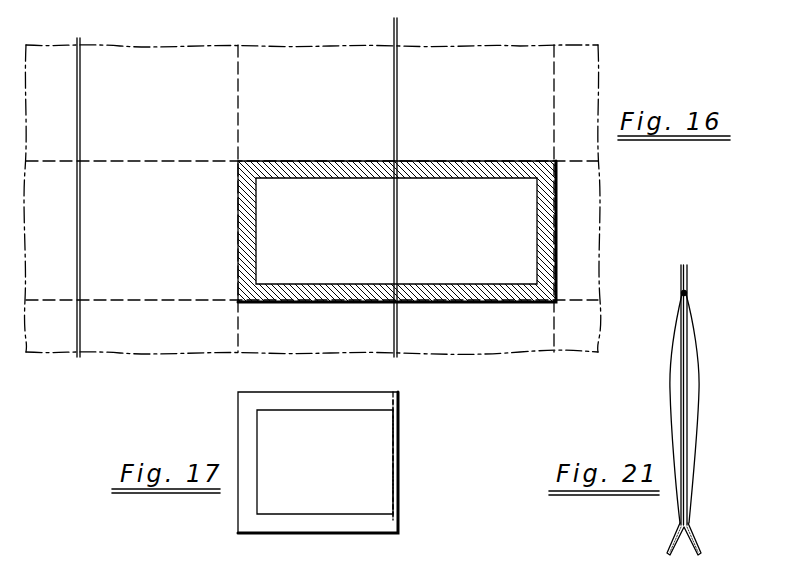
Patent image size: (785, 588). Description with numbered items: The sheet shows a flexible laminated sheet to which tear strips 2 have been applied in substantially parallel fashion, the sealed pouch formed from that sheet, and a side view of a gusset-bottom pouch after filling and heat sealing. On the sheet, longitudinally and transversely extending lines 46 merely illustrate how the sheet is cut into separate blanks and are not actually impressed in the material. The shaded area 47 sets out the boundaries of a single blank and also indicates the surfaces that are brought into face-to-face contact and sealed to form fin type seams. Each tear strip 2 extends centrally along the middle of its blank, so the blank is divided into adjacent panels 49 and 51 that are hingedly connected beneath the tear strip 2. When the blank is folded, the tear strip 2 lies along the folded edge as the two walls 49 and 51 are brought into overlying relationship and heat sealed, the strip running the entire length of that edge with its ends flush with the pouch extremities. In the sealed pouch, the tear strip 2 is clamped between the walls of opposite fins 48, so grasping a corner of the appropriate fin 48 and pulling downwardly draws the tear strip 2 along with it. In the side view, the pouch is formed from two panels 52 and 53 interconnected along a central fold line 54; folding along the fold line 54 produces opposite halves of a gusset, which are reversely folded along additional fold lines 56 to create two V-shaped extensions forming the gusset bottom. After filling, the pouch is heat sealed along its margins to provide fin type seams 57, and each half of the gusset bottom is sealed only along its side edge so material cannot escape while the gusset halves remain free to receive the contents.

In FIG. 16, the tear strip 2 is at (80, 40).
In FIG. 17, the tear strip 2 is at (396, 483).
In FIG. 21, the tear strip 2 is at (688, 293).
In FIG. 16, the cutting lines 46 is at (240, 116).
In FIG. 16, the shaded area 47 is at (248, 216).
In FIG. 17, the fin 48 is at (333, 401).
In FIG. 16, the panel 49 is at (330, 247).
In FIG. 16, the panel 51 is at (483, 247).
In FIG. 21, the panel 52 is at (672, 377).
In FIG. 21, the panel 53 is at (697, 377).
In FIG. 21, the central fold line 54 is at (684, 534).
In FIG. 21, the additional fold lines 56 is at (668, 556).
In FIG. 21, the fin type seams 57 is at (688, 456).